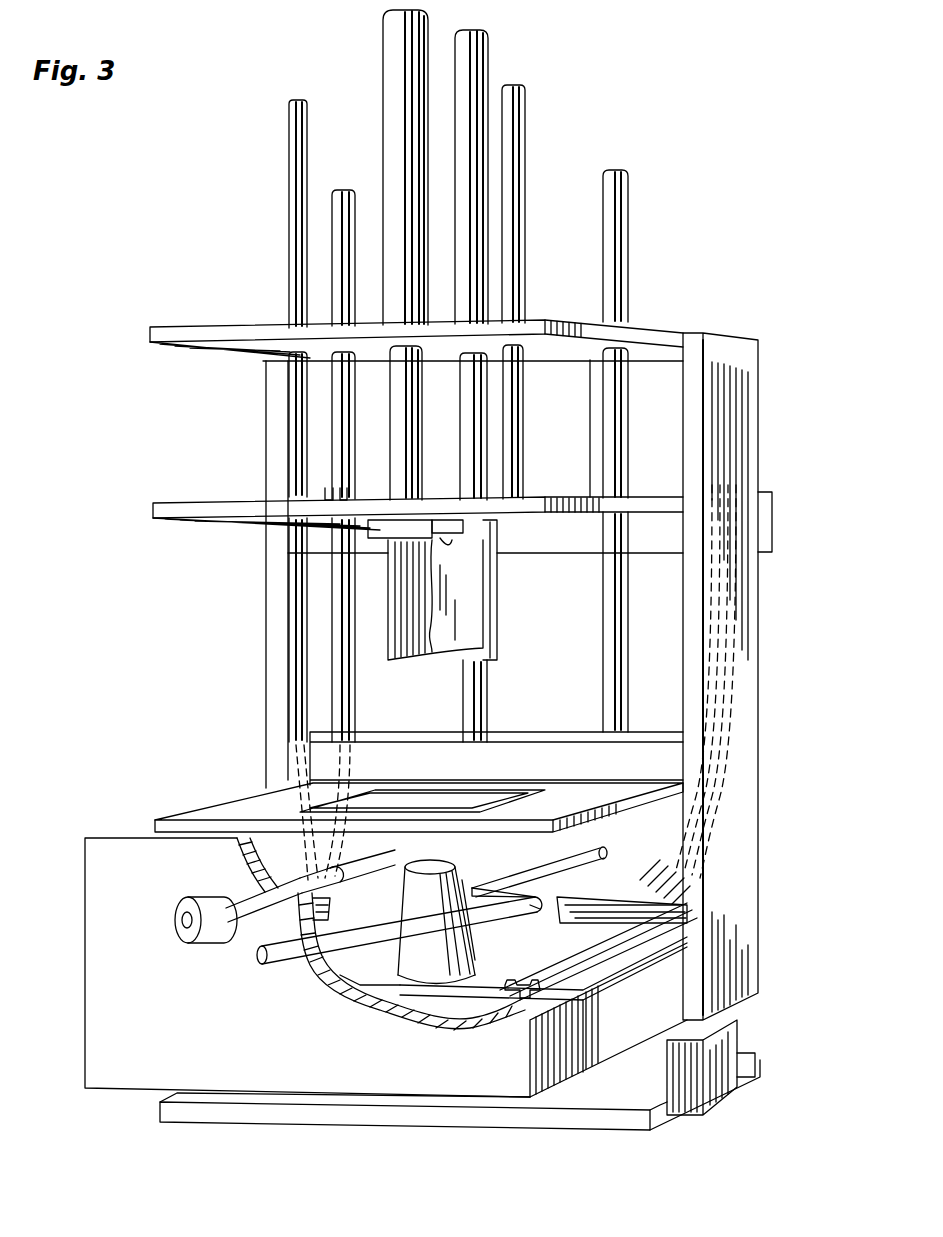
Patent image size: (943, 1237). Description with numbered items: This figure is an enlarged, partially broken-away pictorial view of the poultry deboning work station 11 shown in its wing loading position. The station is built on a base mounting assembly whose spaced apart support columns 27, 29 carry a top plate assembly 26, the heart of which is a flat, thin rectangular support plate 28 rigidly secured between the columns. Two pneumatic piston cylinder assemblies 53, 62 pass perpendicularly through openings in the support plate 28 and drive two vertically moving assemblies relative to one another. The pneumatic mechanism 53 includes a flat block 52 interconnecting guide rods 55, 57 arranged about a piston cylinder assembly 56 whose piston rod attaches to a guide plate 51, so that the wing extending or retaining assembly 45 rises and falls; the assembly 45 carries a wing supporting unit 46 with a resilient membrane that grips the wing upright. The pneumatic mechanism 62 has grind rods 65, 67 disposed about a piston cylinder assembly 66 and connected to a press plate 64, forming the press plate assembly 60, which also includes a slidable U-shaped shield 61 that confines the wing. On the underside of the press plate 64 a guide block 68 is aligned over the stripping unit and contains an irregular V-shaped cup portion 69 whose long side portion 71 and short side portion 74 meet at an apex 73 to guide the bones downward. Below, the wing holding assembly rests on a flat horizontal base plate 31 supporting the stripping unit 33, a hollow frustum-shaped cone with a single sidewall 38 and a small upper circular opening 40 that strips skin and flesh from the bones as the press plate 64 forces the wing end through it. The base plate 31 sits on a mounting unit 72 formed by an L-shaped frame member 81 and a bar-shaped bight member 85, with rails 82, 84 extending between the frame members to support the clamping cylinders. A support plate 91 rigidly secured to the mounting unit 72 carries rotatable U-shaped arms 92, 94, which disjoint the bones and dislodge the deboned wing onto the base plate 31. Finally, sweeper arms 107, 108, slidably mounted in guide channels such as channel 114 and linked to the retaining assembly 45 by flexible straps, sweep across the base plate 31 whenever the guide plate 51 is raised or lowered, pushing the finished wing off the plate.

The work station 11 is at (672, 110).
The top plate assembly 26 is at (640, 320).
The support column 27 is at (740, 965).
The support plate 28 is at (150, 333).
The support column 29 is at (268, 735).
The base plate 31 is at (627, 968).
The stripping unit 33 is at (486, 960).
The sidewall 38 is at (430, 970).
The upper circular opening 40 is at (450, 868).
The wing extending assembly 45 is at (156, 802).
The wing supporting unit 46 is at (540, 787).
The guide plate 51 is at (155, 822).
The flat block 52 is at (527, 755).
The piston cylinder assembly 53 is at (529, 77).
The guide rod 55 is at (333, 205).
The piston cylinder assembly 56 is at (490, 58).
The guide rod 57 is at (620, 190).
The press plate assembly 60 is at (153, 482).
The U-shaped shield 61 is at (470, 607).
The piston cylinder assembly 62 is at (300, 86).
The press plate 64 is at (158, 512).
The grind rod 65 is at (290, 205).
The piston cylinder assembly 66 is at (382, 57).
The grind rod 67 is at (523, 105).
The guide block 68 is at (380, 530).
The V-shaped cup portion 69 is at (450, 577).
The long side portion 71 is at (433, 650).
The mounting unit 72 is at (590, 1060).
The apex 73 is at (453, 527).
The short side portion 74 is at (450, 533).
The L-shaped frame member 81 is at (680, 1090).
The rail 82 is at (635, 1118).
The rail 84 is at (745, 1063).
The bight member 85 is at (560, 1060).
The support plate 91 is at (122, 1077).
The U-shaped arm 92 is at (300, 945).
The U-shaped arm 94 is at (228, 885).
The sweeper arm 107 is at (655, 882).
The sweeper arm 108 is at (348, 888).
The guide channel 114 is at (690, 915).